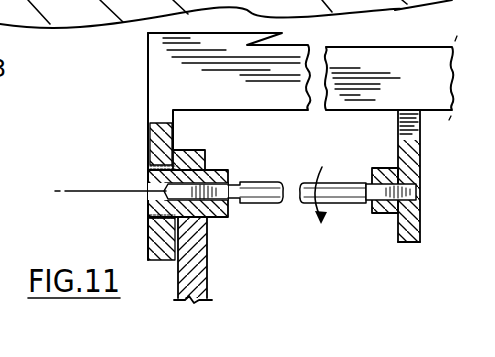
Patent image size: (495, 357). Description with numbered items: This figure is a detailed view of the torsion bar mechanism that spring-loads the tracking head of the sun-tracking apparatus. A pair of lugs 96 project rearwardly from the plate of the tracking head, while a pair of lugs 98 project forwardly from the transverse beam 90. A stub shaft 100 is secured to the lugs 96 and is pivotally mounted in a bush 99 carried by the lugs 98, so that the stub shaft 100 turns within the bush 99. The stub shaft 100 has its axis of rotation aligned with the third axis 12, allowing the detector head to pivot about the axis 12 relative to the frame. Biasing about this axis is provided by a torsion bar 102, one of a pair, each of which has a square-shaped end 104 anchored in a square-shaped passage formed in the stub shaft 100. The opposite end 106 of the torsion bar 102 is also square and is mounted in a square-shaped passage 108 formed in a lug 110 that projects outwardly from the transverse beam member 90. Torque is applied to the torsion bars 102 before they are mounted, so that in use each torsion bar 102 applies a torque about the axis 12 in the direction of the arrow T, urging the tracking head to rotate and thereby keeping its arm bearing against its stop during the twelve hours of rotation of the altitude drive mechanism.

The third axis 12 is at (77, 194).
The beam 90 is at (231, 100).
The lugs 96 is at (207, 288).
The lugs 98 is at (148, 141).
The bush 99 is at (148, 170).
The stub shaft 100 is at (148, 182).
The torsion bars 102 is at (268, 198).
The square-shaped end 104 is at (207, 170).
The opposite ends 106 is at (375, 168).
The square-shaped passage 108 is at (420, 187).
The lug 110 is at (411, 244).